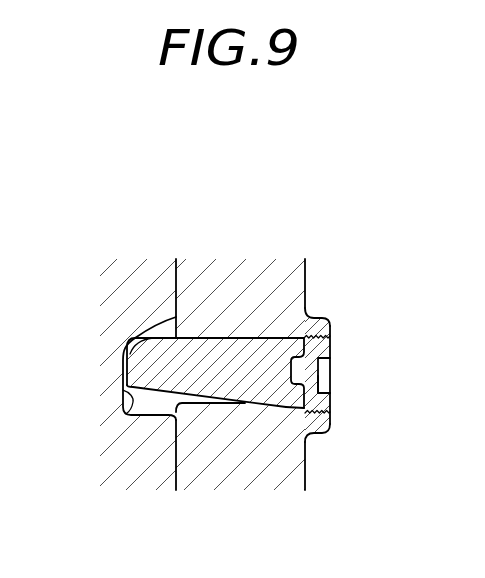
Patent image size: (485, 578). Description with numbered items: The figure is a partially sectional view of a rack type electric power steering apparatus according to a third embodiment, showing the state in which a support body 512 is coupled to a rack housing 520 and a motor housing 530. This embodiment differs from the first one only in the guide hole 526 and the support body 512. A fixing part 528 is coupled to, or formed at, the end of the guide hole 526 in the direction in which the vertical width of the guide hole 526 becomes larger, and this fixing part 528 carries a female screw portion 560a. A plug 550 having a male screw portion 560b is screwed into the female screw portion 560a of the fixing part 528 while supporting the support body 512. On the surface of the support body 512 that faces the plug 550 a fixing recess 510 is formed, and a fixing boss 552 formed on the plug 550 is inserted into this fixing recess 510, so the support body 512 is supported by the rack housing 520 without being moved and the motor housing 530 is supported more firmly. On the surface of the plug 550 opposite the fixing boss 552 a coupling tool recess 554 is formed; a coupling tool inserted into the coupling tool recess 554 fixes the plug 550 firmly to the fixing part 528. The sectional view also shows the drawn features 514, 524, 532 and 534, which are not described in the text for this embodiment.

The fixing recess 510 is at (330, 362).
The support body 512 is at (253, 353).
The seal lip skin 514 is at (157, 392).
The rack housing 520 is at (200, 277).
The retaining member 524 is at (293, 342).
The guide hole 526 is at (197, 392).
The fixing part 528 is at (332, 323).
The motor housing 530 is at (138, 277).
The lower lip projection 532 is at (126, 414).
The upper lip 534 is at (122, 352).
The plug 550 is at (330, 407).
The fixing boss 552 is at (297, 412).
The coupling tool recess 554 is at (327, 390).
The female screw portion 560a is at (330, 345).
The male screw portion 560b is at (326, 437).